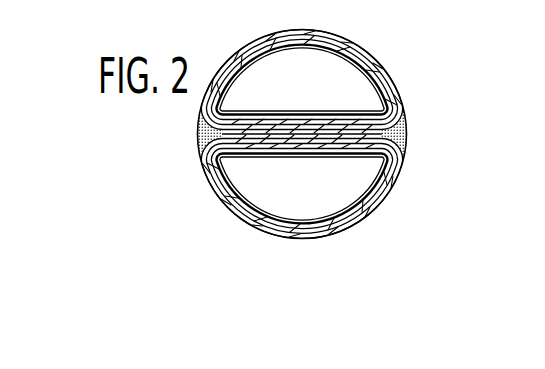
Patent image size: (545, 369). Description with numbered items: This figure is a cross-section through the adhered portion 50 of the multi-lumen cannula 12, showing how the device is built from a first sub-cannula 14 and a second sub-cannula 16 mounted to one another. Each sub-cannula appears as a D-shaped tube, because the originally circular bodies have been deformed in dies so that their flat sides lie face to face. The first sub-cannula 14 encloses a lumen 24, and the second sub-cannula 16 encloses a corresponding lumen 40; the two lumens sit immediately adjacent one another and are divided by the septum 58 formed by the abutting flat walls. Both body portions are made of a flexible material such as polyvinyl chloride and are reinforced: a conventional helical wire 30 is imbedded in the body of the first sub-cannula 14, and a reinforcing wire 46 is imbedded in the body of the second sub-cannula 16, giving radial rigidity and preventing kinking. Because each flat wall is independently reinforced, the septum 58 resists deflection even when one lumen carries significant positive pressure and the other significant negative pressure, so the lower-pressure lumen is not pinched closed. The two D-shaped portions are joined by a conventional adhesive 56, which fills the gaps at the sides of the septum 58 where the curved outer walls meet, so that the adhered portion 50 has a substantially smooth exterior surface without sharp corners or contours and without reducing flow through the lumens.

The multi-lumen cannula 12 is at (278, 238).
The first sub-cannula 14 is at (318, 239).
The second sub-cannula 16 is at (333, 33).
The lumen 24 is at (368, 218).
The helical wire 30 is at (394, 186).
The lumen 40 is at (291, 52).
The reinforcing wire 46 is at (237, 69).
The adhered portion 50 is at (380, 73).
The adhesive 56 is at (203, 130).
The septum 58 is at (283, 134).